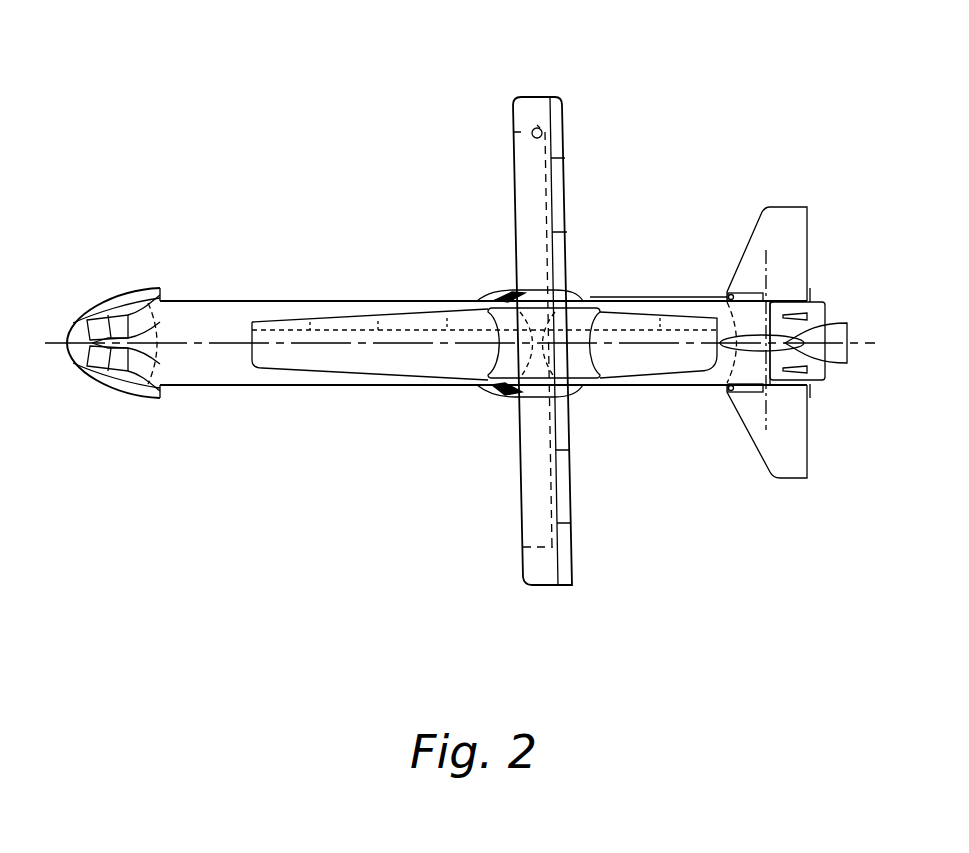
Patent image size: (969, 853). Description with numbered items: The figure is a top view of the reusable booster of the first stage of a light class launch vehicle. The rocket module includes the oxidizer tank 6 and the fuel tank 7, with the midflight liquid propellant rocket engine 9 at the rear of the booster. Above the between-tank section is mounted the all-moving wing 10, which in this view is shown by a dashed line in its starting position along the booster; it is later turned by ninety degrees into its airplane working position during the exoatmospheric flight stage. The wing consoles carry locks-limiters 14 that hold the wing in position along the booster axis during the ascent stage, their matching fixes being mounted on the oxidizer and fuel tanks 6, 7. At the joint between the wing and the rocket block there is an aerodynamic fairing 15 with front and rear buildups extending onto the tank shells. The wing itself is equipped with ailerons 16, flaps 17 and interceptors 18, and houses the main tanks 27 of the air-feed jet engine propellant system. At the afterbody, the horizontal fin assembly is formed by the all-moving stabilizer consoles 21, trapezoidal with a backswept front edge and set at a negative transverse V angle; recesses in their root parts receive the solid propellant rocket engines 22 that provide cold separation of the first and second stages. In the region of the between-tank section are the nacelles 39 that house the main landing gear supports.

The oxidizer tank 6 is at (217, 313).
The fuel tank 7 is at (668, 310).
The midflight liquid propellant rocket engine 9 is at (838, 352).
The all-moving wing 10 is at (535, 563).
The locks-limiters 14 is at (272, 347).
The aerodynamic fairing 15 is at (497, 300).
The ailerons 16 is at (560, 105).
The flaps 17 is at (560, 262).
The interceptors 18 is at (548, 262).
The all-moving consoles of the stabilizer 21 is at (783, 220).
The solid propellant rocket engines 22 is at (733, 386).
The main tanks 27 is at (536, 128).
The nacelles 39 is at (498, 388).